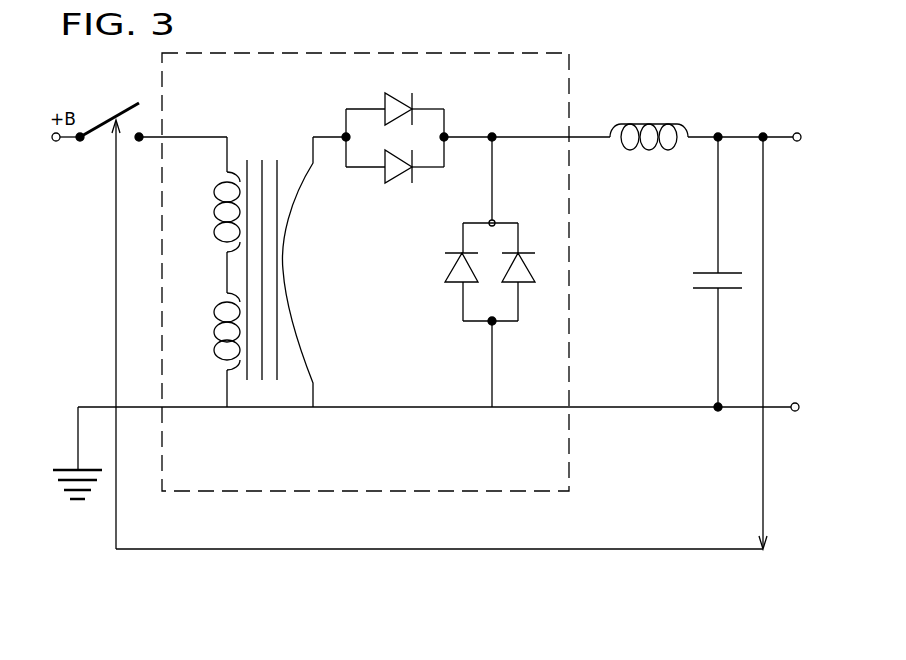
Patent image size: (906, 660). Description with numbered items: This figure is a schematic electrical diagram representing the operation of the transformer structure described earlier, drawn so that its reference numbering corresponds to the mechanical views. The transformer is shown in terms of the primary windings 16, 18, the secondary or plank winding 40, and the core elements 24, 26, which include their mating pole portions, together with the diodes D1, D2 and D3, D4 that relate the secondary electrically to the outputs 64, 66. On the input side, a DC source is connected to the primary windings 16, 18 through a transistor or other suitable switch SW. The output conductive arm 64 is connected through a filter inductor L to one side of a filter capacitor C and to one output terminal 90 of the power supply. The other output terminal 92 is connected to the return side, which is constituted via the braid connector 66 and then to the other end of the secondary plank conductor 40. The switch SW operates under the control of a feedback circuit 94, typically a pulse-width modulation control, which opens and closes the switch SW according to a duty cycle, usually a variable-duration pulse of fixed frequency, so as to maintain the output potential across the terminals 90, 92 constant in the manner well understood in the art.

The switch SW is at (113, 110).
The primary winding 16 is at (215, 193).
The primary winding 18 is at (212, 311).
The core element 24 is at (285, 225).
The core element 26 is at (262, 158).
The secondary plank winding 40 is at (283, 283).
The diode D1 is at (398, 100).
The diode D2 is at (398, 172).
The diode D3 is at (458, 265).
The diode D4 is at (530, 268).
The output conductive arm 64 is at (552, 138).
The braid connector 66 is at (677, 407).
The filter inductor L is at (655, 125).
The filter capacitor C is at (714, 272).
The output terminal 90 is at (794, 133).
The output terminal 92 is at (795, 400).
The feedback circuit 94 is at (439, 334).